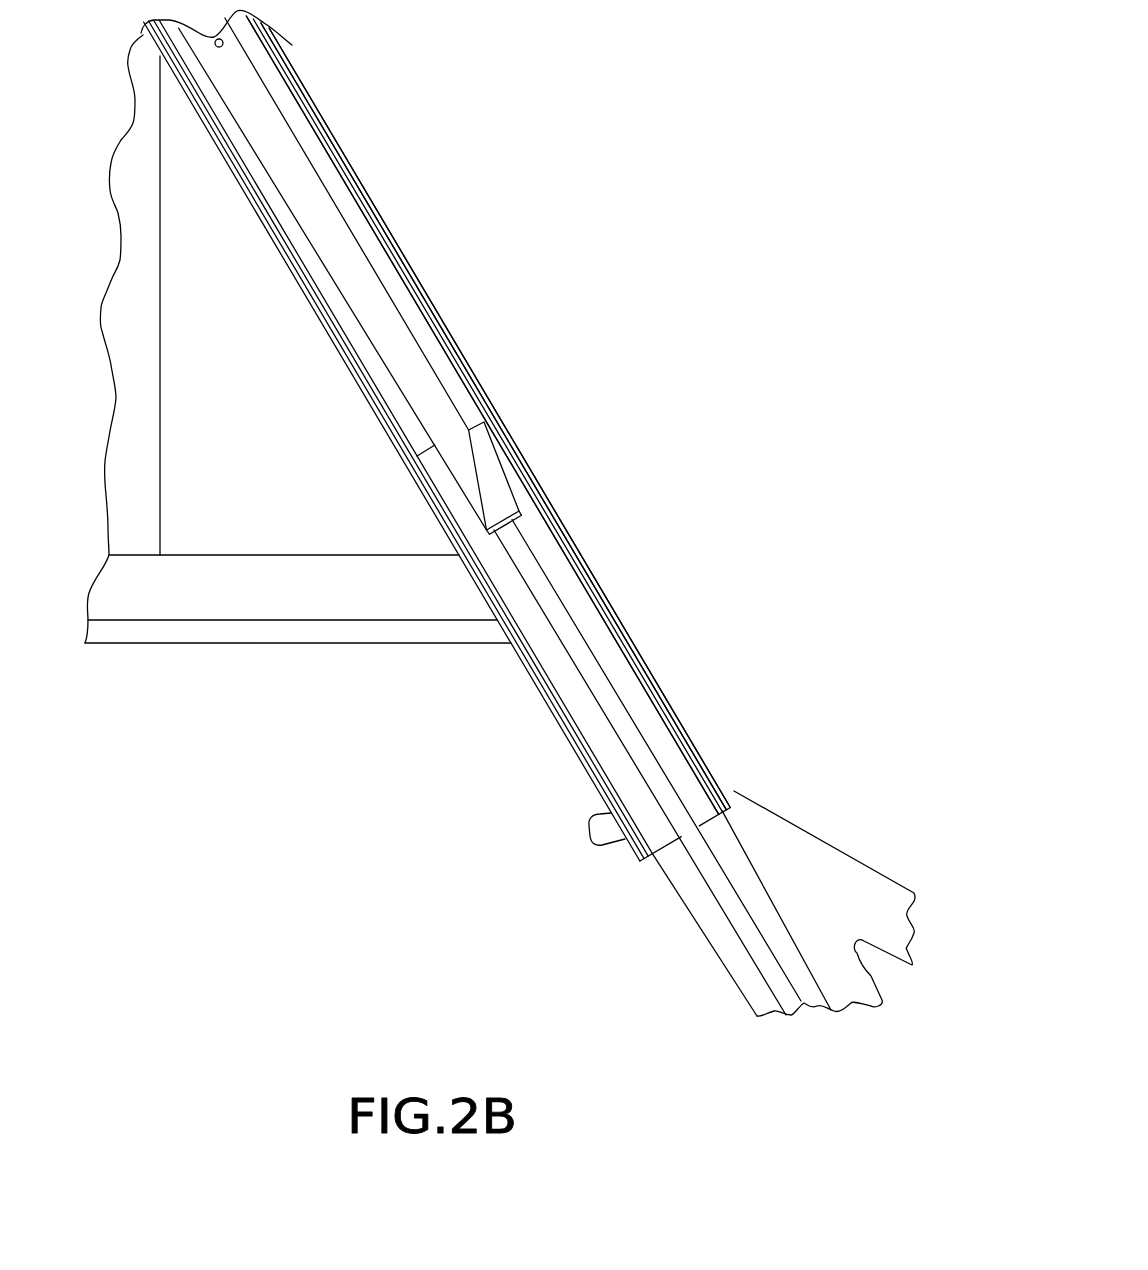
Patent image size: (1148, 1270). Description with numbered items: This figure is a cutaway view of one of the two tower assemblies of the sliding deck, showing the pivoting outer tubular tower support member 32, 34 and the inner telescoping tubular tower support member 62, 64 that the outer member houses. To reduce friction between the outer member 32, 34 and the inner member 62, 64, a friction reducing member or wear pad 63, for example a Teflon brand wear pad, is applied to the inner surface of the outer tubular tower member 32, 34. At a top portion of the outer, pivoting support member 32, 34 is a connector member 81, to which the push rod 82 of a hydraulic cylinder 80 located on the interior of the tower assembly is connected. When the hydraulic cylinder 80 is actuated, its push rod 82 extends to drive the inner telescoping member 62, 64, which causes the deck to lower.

The outer tubular tower support member 32 is at (360, 172).
The outer tubular tower support member 34 is at (495, 416).
The wear pad 63 is at (377, 210).
The interior telescoping tubular tower support member 62 is at (390, 248).
The interior telescoping tubular tower support member 64 is at (482, 415).
The hydraulic cylinder 80 is at (415, 362).
The connector member 81 is at (219, 40).
The push rod 82 is at (542, 588).